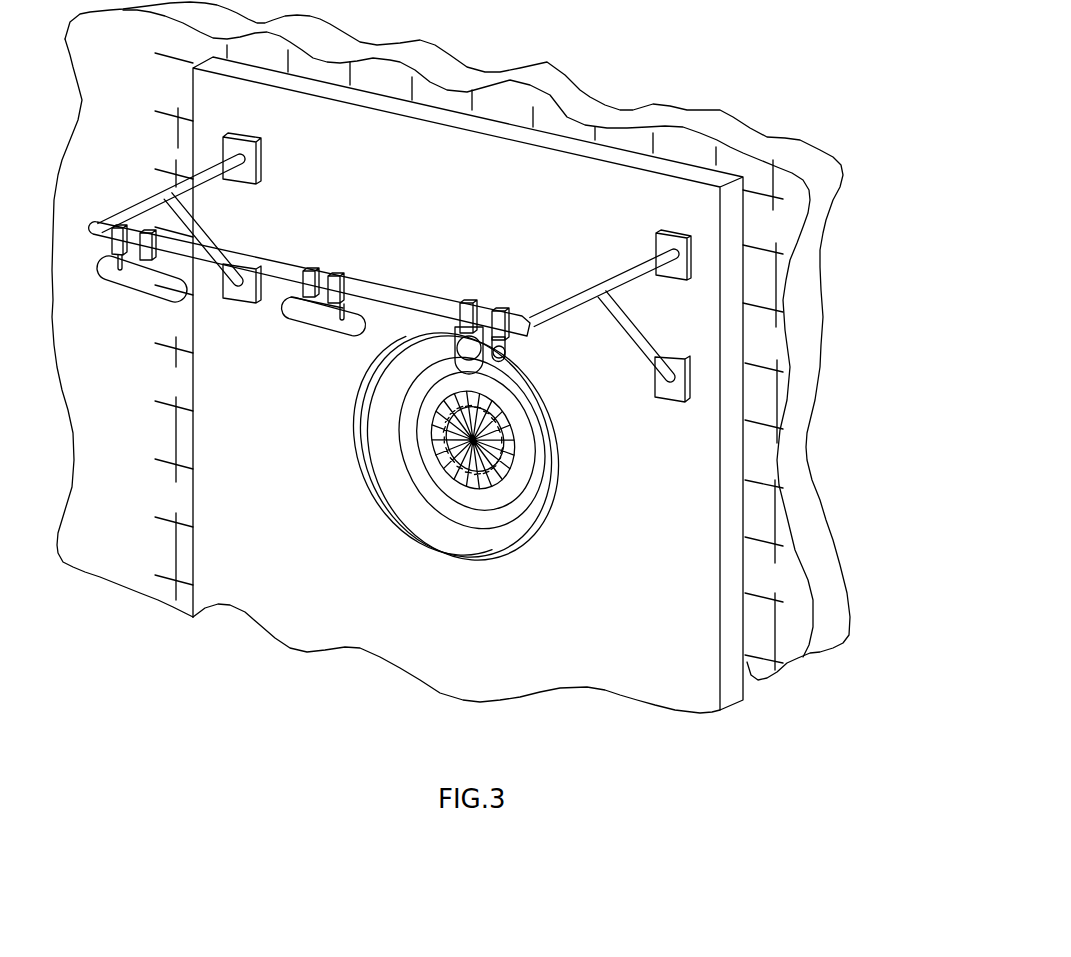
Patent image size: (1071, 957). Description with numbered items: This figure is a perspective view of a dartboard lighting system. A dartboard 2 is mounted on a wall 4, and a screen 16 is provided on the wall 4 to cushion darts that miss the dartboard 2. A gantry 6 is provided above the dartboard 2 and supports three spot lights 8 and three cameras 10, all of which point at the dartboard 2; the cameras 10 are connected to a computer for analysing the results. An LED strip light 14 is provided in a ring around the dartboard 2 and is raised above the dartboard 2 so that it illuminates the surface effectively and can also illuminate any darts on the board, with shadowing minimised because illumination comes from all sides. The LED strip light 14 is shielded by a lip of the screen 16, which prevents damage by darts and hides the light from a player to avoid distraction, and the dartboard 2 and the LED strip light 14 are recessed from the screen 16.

The dartboard 2 is at (503, 457).
The wall 4 is at (777, 217).
The gantry 6 is at (587, 297).
The spot light 8 is at (465, 350).
The camera 10 is at (112, 265).
The LED strip light 14 is at (386, 490).
The screen 16 is at (633, 197).